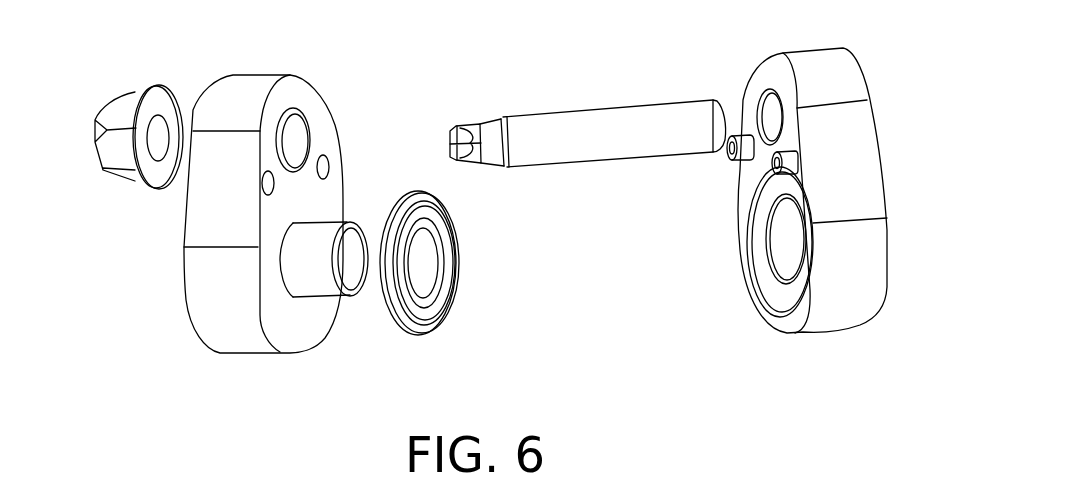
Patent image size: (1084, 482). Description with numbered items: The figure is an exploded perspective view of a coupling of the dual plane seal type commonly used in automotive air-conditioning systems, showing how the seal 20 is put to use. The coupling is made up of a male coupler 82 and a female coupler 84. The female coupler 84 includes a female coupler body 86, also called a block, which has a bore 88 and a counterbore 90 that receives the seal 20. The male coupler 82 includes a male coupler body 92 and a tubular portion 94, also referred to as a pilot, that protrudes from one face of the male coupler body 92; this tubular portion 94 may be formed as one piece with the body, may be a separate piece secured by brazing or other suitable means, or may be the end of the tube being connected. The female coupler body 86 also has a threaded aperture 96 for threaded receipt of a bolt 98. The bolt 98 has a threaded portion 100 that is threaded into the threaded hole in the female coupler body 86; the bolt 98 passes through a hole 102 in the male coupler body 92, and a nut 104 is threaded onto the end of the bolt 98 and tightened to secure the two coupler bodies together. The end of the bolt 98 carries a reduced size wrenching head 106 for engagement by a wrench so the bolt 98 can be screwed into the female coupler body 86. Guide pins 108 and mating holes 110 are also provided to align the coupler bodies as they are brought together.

The seal 20 is at (455, 318).
The male coupler 82 is at (260, 68).
The female coupler 84 is at (808, 342).
The female coupler body 86 is at (862, 177).
The bore 88 is at (787, 250).
The counterbore 90 is at (767, 192).
The male coupler body 92 is at (207, 327).
The tubular portion 94 is at (313, 283).
The threaded aperture 96 is at (770, 110).
The bolt 98 is at (563, 104).
The threaded portion 100 is at (692, 102).
The hole 102 is at (290, 132).
The nut 104 is at (113, 103).
The wrenching head 106 is at (453, 127).
The guide pins 108 is at (772, 164).
The mating holes 110 is at (277, 187).